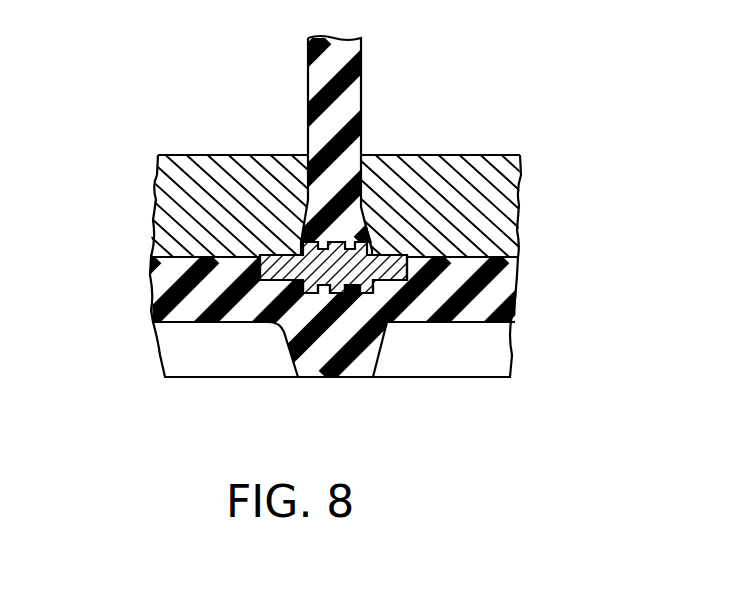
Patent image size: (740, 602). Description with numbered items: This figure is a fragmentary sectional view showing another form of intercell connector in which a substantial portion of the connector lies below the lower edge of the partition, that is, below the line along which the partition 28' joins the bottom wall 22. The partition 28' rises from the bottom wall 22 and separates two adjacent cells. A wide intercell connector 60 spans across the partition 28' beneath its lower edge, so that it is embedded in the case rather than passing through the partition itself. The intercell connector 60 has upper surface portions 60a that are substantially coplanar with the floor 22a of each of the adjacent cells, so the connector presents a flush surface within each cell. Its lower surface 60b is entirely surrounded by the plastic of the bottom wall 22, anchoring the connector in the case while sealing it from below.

The partition 28' is at (342, 131).
The bottom wall 22 is at (331, 287).
The floor 22a is at (476, 258).
The intercell connector 60 is at (329, 266).
The upper surface portions 60a is at (263, 256).
The lower surface 60b is at (281, 281).